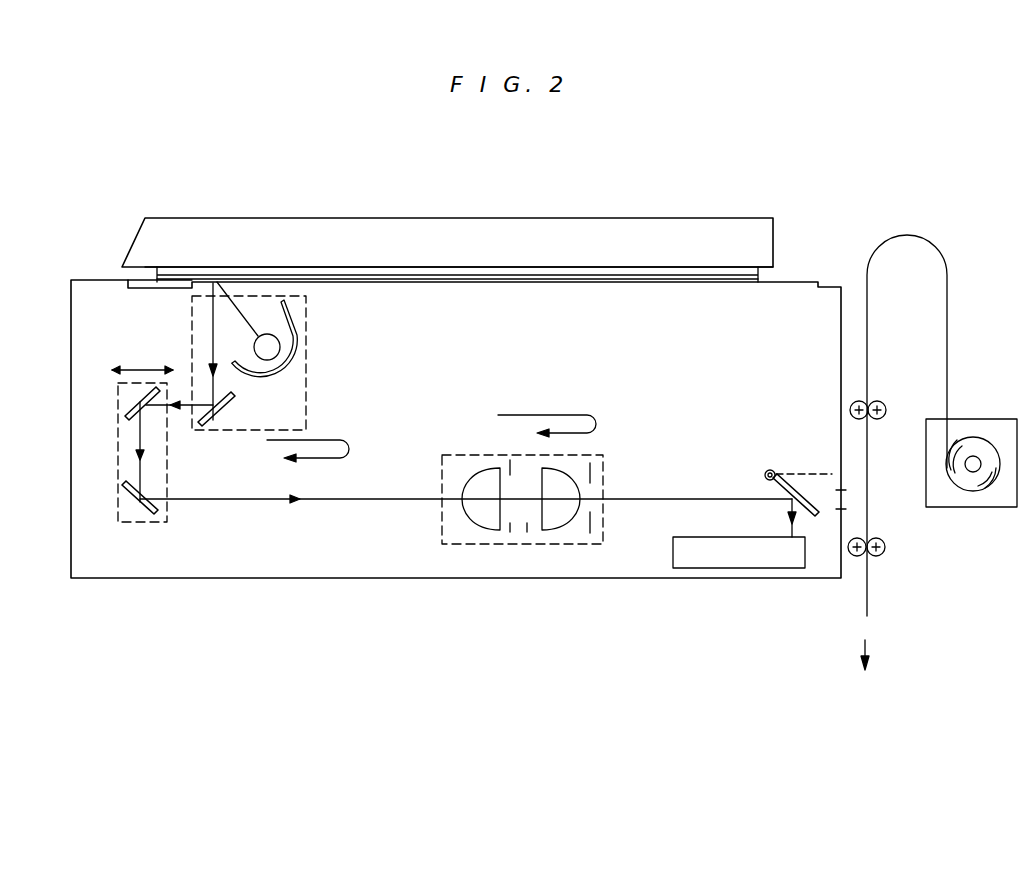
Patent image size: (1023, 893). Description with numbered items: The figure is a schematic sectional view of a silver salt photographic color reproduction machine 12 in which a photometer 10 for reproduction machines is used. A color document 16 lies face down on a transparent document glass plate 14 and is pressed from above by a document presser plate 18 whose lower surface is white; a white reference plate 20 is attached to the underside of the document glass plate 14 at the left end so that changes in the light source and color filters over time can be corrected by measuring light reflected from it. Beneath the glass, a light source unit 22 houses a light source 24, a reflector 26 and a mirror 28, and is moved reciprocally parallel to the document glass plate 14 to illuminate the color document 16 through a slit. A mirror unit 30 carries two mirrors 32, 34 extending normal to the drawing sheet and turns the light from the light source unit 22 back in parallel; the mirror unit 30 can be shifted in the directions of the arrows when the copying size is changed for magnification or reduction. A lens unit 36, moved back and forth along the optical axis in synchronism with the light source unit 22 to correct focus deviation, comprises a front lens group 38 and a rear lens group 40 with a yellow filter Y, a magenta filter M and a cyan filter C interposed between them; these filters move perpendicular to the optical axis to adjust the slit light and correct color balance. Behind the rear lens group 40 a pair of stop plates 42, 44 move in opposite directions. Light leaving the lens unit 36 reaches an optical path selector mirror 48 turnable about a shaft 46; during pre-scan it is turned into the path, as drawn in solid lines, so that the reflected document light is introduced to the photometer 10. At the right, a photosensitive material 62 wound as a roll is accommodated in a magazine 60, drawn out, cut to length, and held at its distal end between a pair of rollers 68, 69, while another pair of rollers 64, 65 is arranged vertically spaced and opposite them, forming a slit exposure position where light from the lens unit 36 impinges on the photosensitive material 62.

The photometer 10 is at (664, 556).
The silver salt photographic color reproduction machine 12 is at (727, 203).
The document glass plate 14 is at (432, 282).
The color document 16 is at (486, 276).
The document presser plate 18 is at (593, 235).
The white reference plate 20 is at (152, 292).
The light source unit 22 is at (192, 352).
The light source 24 is at (281, 349).
The reflector 26 is at (278, 377).
The mirror 28 is at (210, 424).
The mirror unit 30 is at (118, 457).
The mirror 32 is at (130, 397).
The mirror 34 is at (125, 500).
The lens unit 36 is at (441, 507).
The front lens group 38 is at (476, 482).
The rear lens group 40 is at (558, 482).
The stop plate 42 is at (592, 478).
The stop plate 44 is at (592, 530).
The yellow filter Y is at (512, 460).
The magenta filter M is at (510, 533).
The cyan filter C is at (527, 534).
The shaft 46 is at (765, 472).
The optical path selector mirror 48 is at (817, 520).
The magazine 60 is at (940, 500).
The photosensitive material 62 is at (867, 475).
The roller 64 is at (881, 554).
The roller 65 is at (855, 556).
The roller 68 is at (884, 403).
The roller 69 is at (855, 401).